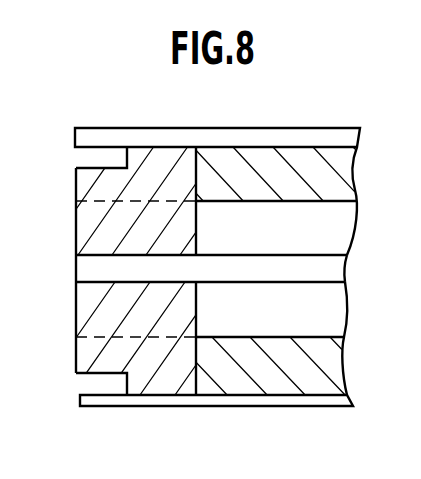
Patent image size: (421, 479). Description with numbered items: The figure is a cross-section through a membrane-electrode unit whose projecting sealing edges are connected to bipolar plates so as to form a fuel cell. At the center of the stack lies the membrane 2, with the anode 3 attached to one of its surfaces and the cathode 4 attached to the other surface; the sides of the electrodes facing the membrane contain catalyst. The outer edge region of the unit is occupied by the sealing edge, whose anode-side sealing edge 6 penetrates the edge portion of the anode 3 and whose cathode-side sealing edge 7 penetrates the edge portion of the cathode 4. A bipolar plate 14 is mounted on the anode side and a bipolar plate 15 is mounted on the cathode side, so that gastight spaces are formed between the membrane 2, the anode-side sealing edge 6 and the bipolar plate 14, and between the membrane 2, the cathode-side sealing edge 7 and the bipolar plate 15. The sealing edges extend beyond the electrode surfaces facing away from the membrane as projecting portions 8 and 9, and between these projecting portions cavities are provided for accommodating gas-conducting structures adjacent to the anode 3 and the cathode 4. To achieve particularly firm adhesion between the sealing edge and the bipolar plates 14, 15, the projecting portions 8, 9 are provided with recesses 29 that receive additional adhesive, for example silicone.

The membrane 2 is at (310, 272).
The anode 3 is at (272, 318).
The cathode 4 is at (272, 239).
The anode-side sealing edge 6 is at (115, 294).
The cathode-side sealing edge 7 is at (120, 217).
The projecting portion of the anode-side sealing edge 8 is at (115, 348).
The projecting portion of the cathode-side sealing edge 9 is at (120, 177).
The bipolar plate 14 is at (240, 400).
The bipolar plate 15 is at (174, 131).
The recess 29 is at (90, 158).